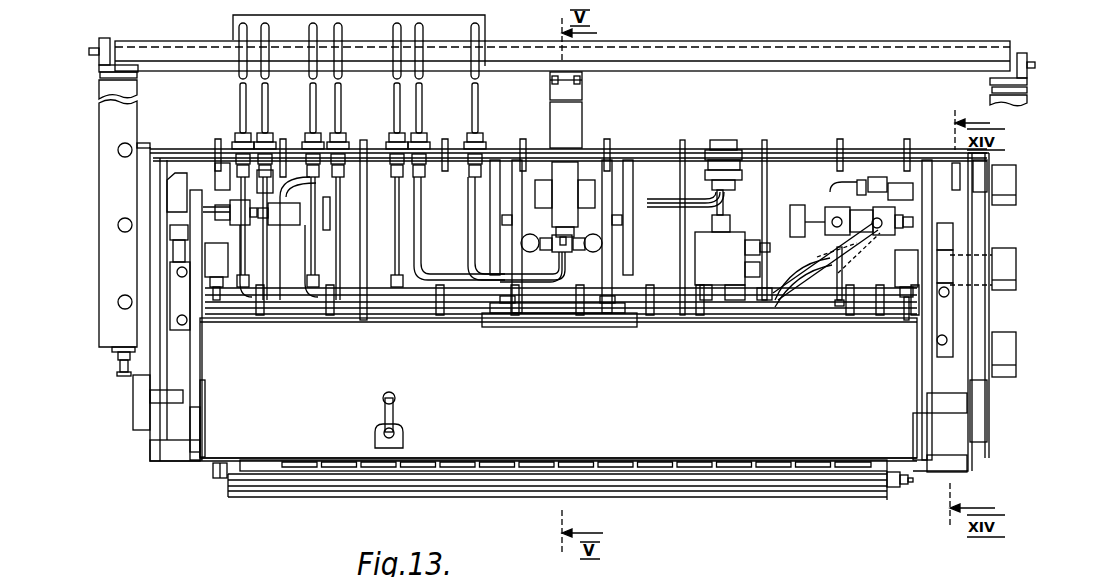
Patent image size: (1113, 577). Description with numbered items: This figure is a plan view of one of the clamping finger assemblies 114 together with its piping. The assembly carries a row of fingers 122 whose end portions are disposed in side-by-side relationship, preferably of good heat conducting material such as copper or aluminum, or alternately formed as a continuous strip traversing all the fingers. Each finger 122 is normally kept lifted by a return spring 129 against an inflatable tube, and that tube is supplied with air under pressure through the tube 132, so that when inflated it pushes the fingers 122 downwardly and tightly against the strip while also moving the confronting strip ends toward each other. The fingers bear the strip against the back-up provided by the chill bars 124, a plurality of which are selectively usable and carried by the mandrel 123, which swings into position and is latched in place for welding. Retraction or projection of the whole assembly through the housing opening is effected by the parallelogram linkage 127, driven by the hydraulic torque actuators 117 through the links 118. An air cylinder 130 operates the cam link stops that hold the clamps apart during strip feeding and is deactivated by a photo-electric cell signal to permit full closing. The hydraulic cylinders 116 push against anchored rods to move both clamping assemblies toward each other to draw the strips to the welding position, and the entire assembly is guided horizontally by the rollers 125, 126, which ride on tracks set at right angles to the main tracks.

The clamping finger assembly 114 is at (1036, 154).
The hydraulic cylinder 116 is at (583, 116).
The hydraulic torque actuator 117 is at (585, 176).
The link 118 is at (507, 186).
The finger 122 is at (490, 471).
The mandrel 123 is at (290, 487).
The chill bar 124 is at (410, 488).
The roller 125 is at (1018, 192).
The roller 126 is at (1018, 271).
The parallelogram linkage 127 is at (160, 384).
The return spring 129 is at (558, 517).
The air cylinder 130 is at (172, 292).
The tube 132 is at (396, 407).